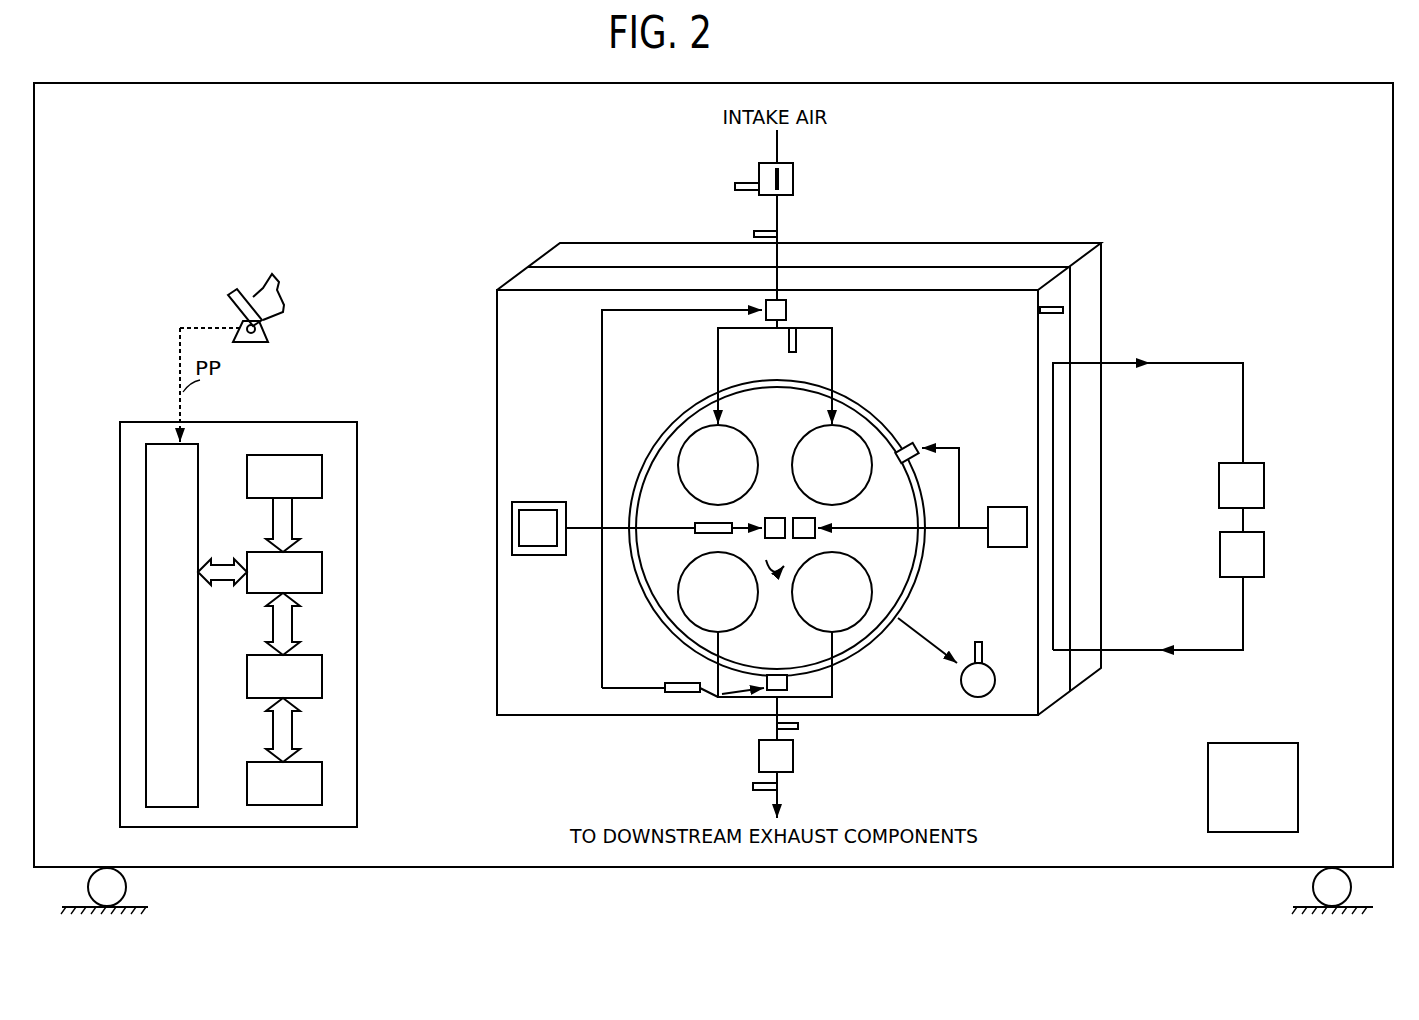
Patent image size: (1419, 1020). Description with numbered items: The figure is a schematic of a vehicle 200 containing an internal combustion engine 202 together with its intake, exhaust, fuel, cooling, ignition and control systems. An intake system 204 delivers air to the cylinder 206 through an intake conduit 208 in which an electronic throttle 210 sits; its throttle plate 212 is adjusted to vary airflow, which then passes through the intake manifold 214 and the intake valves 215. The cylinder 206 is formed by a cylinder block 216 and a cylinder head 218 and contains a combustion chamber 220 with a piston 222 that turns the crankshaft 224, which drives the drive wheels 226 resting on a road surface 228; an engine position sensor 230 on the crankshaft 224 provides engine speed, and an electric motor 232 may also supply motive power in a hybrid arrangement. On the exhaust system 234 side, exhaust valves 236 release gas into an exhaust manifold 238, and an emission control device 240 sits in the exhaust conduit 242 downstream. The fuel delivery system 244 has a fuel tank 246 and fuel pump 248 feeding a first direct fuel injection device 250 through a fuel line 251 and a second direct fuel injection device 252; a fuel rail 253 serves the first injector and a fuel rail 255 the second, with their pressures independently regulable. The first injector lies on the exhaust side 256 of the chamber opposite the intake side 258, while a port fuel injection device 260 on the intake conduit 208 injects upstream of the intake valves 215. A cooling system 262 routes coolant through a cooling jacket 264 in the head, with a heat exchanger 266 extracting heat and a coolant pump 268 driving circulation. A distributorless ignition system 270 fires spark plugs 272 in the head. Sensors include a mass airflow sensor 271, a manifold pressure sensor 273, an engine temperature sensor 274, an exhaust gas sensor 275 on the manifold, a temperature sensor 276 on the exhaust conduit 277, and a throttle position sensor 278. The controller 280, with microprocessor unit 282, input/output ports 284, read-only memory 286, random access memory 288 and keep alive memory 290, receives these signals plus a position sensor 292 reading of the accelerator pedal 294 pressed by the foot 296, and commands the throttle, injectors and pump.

The vehicle 200 is at (36, 84).
The internal combustion engine 202 is at (604, 204).
The intake system 204 is at (686, 195).
The cylinder 206 is at (925, 552).
The intake conduit 208 is at (779, 213).
The electronic throttle 210 is at (793, 178).
The throttle plate 212 is at (762, 173).
The intake manifold 214 is at (803, 329).
The intake valves 215 is at (680, 472).
The cylinder block 216 is at (1028, 256).
The cylinder head 218 is at (973, 278).
The combustion chamber 220 is at (765, 555).
The piston 222 is at (918, 571).
The crankshaft 224 is at (994, 680).
The drive wheels 226 is at (1352, 887).
The road surface 228 is at (1306, 905).
The engine position sensor 230 is at (985, 649).
The electric motor 232 is at (1218, 743).
The exhaust system 234 is at (849, 744).
The exhaust valves 236 is at (680, 594).
The exhaust manifold 238 is at (833, 697).
The emission control device 240 is at (759, 756).
The exhaust conduit 242 is at (777, 728).
The fuel delivery system 244 is at (539, 455).
The fuel tank 246 is at (560, 555).
The fuel pump 248 is at (530, 555).
The first direct fuel injection device 250 is at (777, 674).
The fuel line 251 is at (580, 525).
The second direct fuel injection device 252 is at (778, 517).
The fuel rail 253 is at (682, 682).
The fuel rail 255 is at (703, 534).
The exhaust side 256 is at (650, 589).
The intake side 258 is at (664, 451).
The port fuel injection device 260 is at (787, 308).
The cooling system 262 is at (1339, 491).
The cooling jacket 264 is at (1053, 434).
The heat exchanger 266 is at (1264, 472).
The coolant pump 268 is at (1264, 568).
The distributorless ignition system 270 is at (1006, 506).
The mass airflow sensor 271 is at (754, 234).
The spark plugs 272 is at (800, 517).
The pressure sensor 273 is at (796, 340).
The temperature sensor 274 is at (1063, 308).
The exhaust gas sensor 275 is at (798, 726).
The temperature sensor 276 is at (753, 786).
The exhaust conduit 277 is at (785, 800).
The throttle position sensor 278 is at (756, 190).
The controller 280 is at (357, 422).
The microprocessor unit 282 is at (322, 560).
The input/output ports 284 is at (199, 452).
The read-only memory 286 is at (322, 470).
The random access memory 288 is at (322, 675).
The keep alive memory 290 is at (322, 780).
The position sensor 292 is at (262, 329).
The accelerator pedal 294 is at (232, 303).
The foot 296 is at (279, 293).